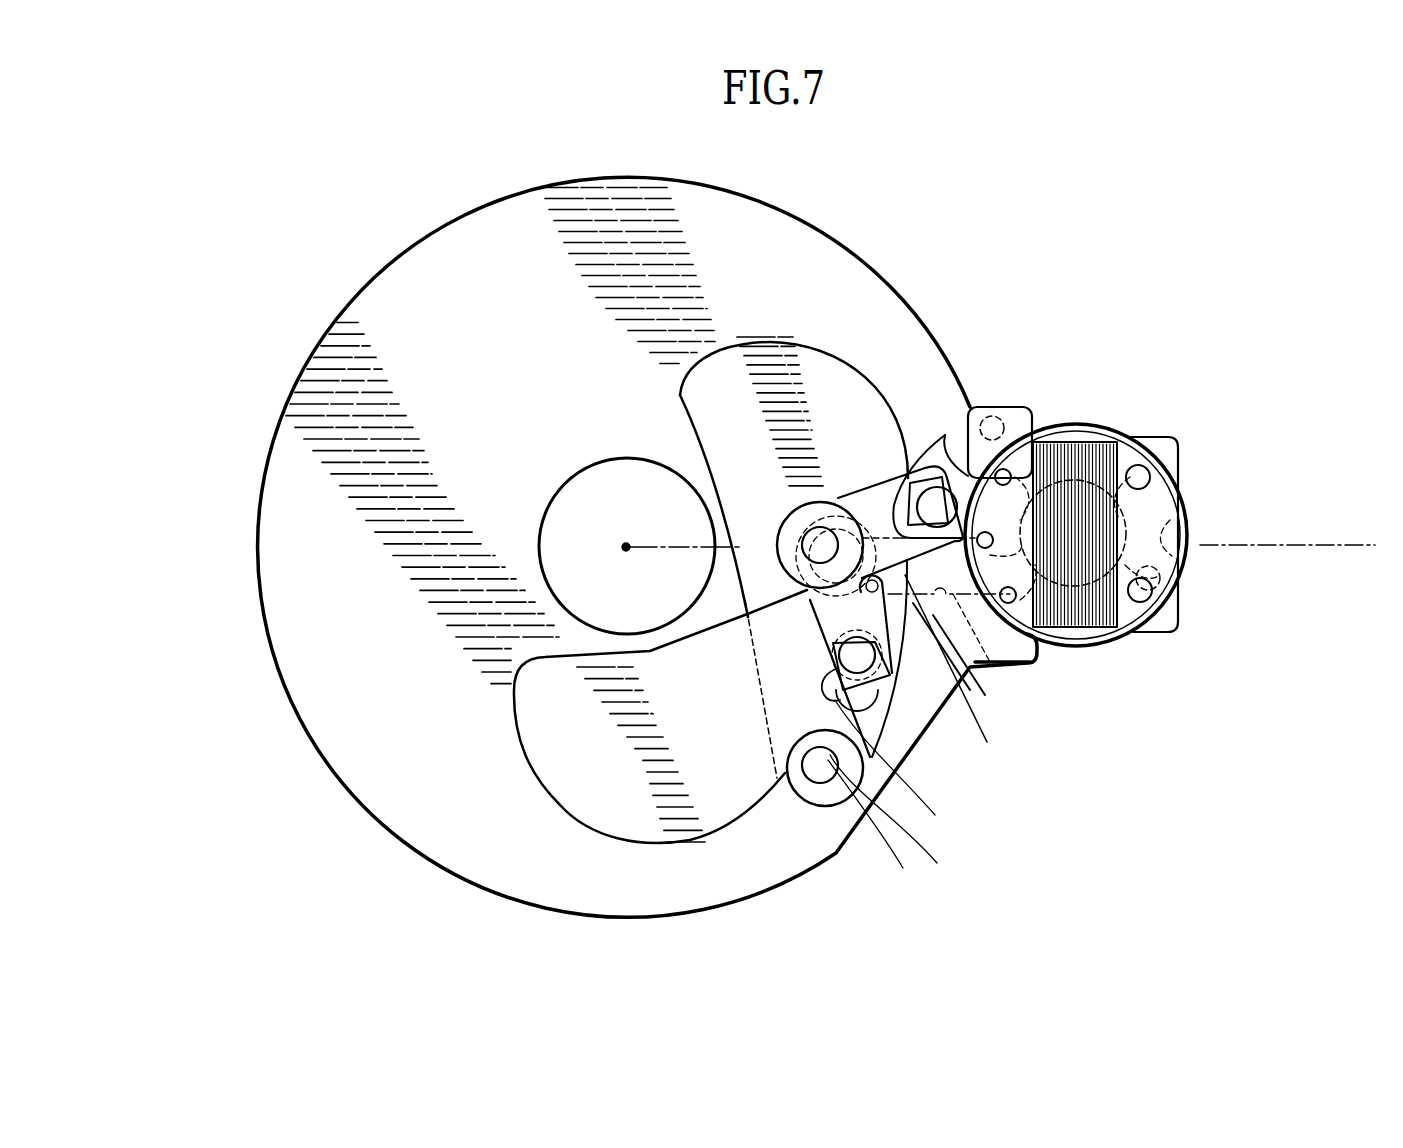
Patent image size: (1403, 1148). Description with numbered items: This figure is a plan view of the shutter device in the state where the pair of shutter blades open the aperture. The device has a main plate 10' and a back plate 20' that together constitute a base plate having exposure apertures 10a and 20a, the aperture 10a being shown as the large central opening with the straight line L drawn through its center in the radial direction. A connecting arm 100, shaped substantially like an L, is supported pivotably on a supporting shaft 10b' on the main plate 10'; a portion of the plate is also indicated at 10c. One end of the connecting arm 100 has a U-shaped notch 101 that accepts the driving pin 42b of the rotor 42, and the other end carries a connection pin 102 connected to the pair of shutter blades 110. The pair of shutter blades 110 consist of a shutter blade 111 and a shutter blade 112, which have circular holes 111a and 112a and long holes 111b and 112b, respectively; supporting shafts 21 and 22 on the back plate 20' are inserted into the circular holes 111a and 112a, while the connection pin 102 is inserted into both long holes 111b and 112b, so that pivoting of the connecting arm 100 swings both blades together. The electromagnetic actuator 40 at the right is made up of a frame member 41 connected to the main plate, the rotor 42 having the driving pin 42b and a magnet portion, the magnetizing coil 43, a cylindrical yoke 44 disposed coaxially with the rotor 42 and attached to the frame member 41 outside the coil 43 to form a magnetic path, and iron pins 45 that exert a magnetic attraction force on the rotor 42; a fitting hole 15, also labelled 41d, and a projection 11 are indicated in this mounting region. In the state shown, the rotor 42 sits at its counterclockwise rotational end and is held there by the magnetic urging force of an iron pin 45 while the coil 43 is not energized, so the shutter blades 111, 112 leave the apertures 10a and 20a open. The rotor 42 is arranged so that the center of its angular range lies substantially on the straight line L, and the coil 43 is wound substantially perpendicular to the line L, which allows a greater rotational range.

The main plate 10' is at (647, 547).
The back plate 20' is at (647, 547).
The exposure aperture 10a is at (628, 516).
The exposure aperture 20a is at (548, 512).
The supporting shaft 10b' is at (838, 450).
The bracket portion 10c is at (975, 648).
The pair of shutter blades 110 is at (626, 537).
The shutter blade 111 is at (550, 797).
The shutter blade 112 is at (767, 342).
The circular hole 111a is at (972, 666).
The long hole 111b is at (909, 772).
The circular hole 112a is at (885, 831).
The long hole 112b is at (914, 817).
The connecting arm 100 is at (893, 478).
The U-shaped notch 101 is at (925, 478).
The connection pin 102 is at (855, 690).
The supporting shaft 21 is at (954, 655).
The supporting shaft 22 is at (820, 772).
The electromagnetic actuator 40 is at (1137, 523).
The frame member 41 is at (1165, 540).
The mounting hole 41d is at (1146, 479).
The fitting hole 15 is at (1002, 420).
The rotor 42 is at (1172, 520).
The driving pin 42b is at (945, 433).
The magnetizing coil 43 is at (1115, 445).
The yoke 44 is at (1180, 472).
The iron pin 45 is at (962, 412).
The projection 11 is at (1180, 447).
The straight line L is at (1322, 542).